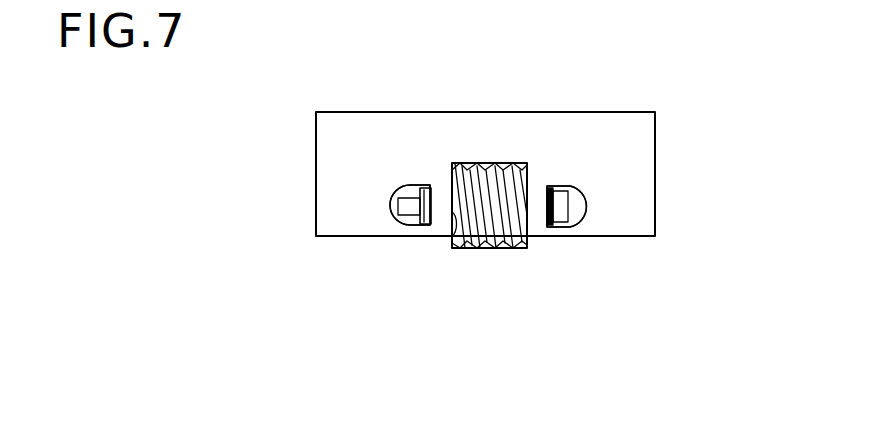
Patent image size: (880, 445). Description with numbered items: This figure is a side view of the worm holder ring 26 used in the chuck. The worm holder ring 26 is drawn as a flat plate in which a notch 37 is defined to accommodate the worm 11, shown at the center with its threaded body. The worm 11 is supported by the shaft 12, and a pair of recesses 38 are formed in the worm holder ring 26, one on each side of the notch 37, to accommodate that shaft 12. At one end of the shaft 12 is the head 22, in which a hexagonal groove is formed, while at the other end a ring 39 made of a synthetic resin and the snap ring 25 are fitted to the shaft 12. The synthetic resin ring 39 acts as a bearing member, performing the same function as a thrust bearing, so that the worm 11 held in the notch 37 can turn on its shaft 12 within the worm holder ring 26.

The worm 11 is at (503, 241).
The shaft 12 is at (396, 201).
The head 22 is at (565, 196).
The snap ring 25 is at (418, 192).
The worm holder ring 26 is at (647, 187).
The notch 37 is at (457, 241).
The recesses 38 is at (403, 226).
The ring 39 is at (428, 185).